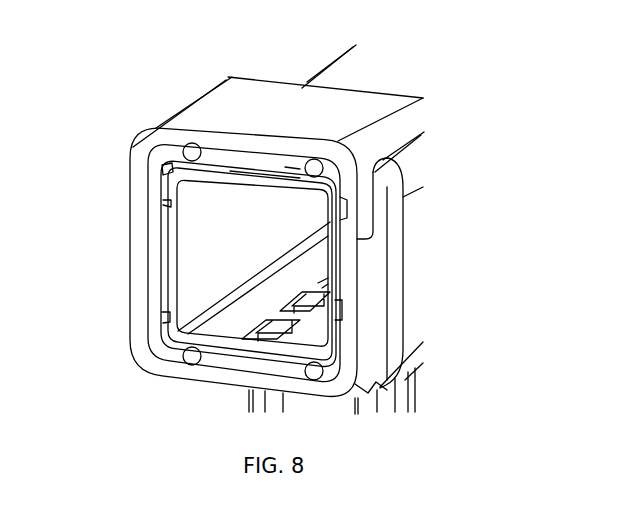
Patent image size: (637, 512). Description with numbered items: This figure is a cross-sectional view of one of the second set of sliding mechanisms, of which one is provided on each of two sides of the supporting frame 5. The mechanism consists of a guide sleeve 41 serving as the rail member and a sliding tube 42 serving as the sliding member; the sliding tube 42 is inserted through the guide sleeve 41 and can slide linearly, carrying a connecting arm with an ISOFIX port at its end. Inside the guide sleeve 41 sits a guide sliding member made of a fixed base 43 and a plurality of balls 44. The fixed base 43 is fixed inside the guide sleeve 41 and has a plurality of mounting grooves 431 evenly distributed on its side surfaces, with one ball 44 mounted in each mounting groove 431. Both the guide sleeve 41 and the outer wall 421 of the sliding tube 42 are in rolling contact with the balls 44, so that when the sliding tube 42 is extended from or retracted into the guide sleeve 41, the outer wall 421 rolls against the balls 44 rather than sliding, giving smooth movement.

The supporting frame 5 is at (397, 275).
The guide sleeve 41 is at (137, 242).
The sliding tube 42 is at (167, 207).
The fixed base 43 is at (157, 290).
The balls 44 is at (318, 162).
The outer wall 421 is at (265, 176).
The mounting grooves 431 is at (296, 170).